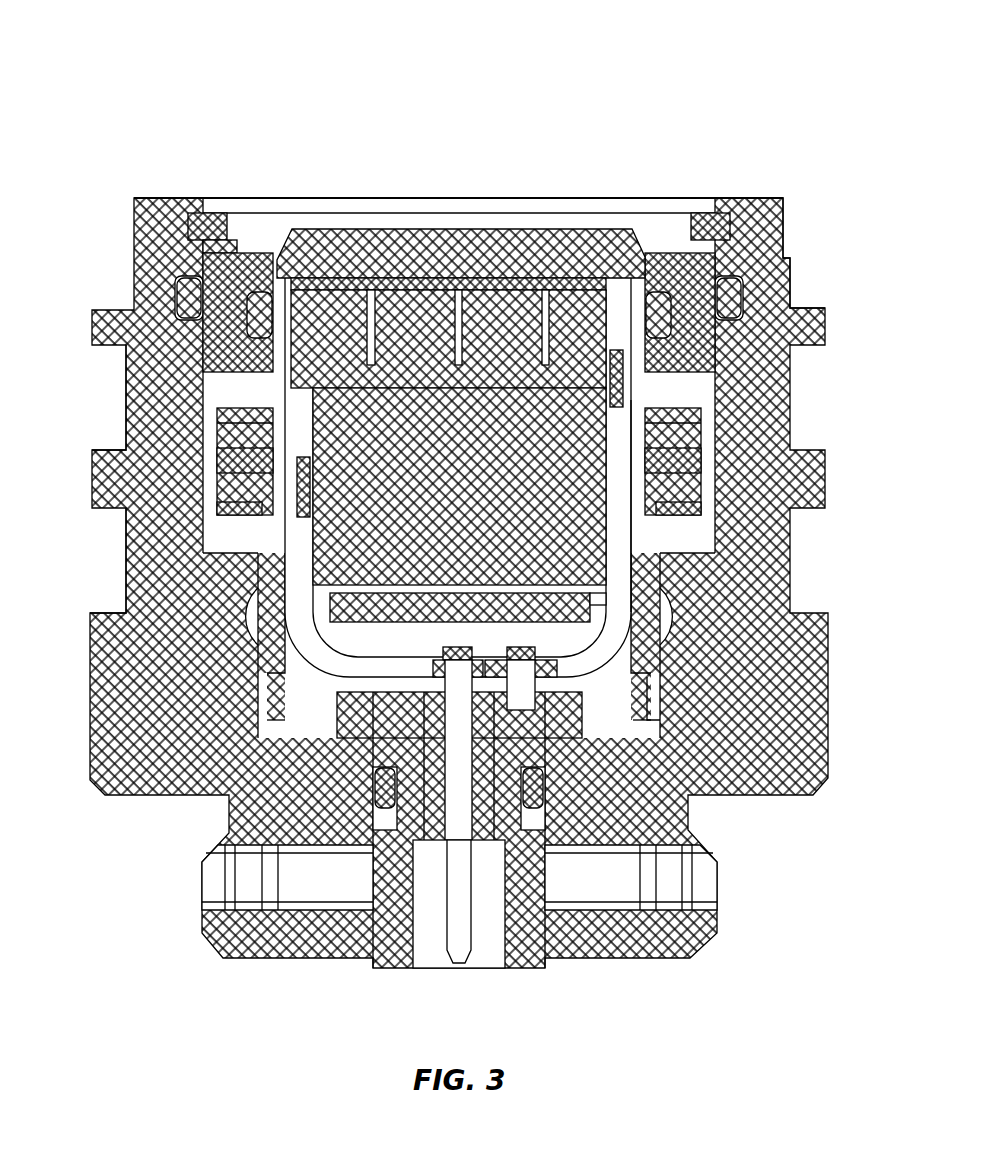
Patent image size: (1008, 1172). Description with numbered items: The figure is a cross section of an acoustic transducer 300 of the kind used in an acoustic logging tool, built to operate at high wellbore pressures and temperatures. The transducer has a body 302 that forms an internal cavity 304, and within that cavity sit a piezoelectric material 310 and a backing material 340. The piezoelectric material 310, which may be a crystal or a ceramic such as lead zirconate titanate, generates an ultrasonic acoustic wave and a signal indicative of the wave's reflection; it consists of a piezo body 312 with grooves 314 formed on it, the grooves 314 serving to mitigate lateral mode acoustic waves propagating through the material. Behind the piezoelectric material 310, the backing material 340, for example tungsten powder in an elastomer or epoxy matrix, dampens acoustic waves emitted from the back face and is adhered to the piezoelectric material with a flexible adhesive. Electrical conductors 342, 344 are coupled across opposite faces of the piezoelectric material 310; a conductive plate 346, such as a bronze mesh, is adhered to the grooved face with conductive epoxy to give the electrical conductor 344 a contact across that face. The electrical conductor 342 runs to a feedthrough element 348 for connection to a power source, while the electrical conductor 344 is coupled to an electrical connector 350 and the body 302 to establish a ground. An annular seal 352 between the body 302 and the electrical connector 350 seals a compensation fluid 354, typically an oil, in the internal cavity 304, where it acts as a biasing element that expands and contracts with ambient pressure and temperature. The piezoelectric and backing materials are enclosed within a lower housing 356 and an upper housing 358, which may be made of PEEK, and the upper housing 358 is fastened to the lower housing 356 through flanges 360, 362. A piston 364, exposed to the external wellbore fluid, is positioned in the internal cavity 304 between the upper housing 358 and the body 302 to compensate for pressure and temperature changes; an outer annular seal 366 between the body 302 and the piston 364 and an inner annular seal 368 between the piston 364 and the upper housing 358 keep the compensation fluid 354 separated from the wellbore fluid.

The acoustic transducer 300 is at (185, 50).
The body 302 is at (757, 195).
The internal cavity 304 is at (185, 405).
The piezoelectric material 310 is at (598, 300).
The piezo body 312 is at (590, 318).
The grooves 314 is at (545, 307).
The backing material 340 is at (590, 495).
The electrical conductor 342 is at (300, 622).
The electrical conductor 344 is at (617, 602).
The conductive plate 346 is at (335, 275).
The feedthrough element 348 is at (458, 948).
The electrical connector 350 is at (380, 718).
The annular seal 352 is at (535, 790).
The compensation fluid 354 is at (215, 528).
The lower housing 356 is at (640, 675).
The upper housing 358 is at (290, 243).
The flange 360 is at (688, 492).
The flange 362 is at (690, 440).
The piston 364 is at (255, 322).
The outer annular seal 366 is at (215, 342).
The inner annular seal 368 is at (190, 300).